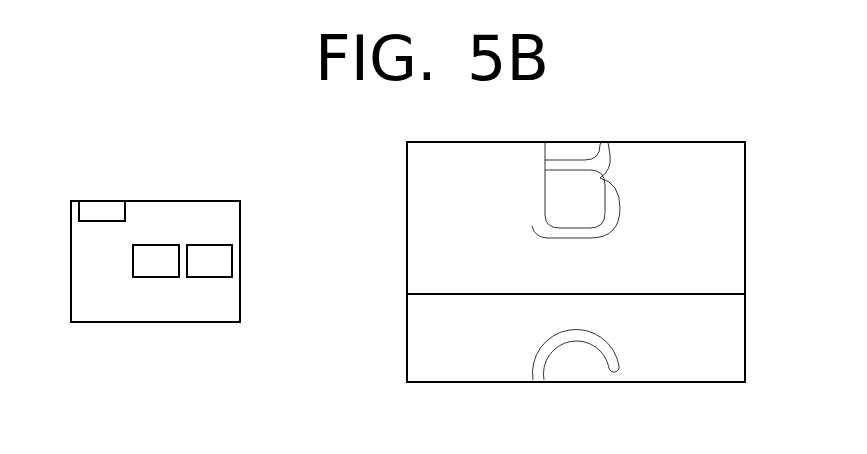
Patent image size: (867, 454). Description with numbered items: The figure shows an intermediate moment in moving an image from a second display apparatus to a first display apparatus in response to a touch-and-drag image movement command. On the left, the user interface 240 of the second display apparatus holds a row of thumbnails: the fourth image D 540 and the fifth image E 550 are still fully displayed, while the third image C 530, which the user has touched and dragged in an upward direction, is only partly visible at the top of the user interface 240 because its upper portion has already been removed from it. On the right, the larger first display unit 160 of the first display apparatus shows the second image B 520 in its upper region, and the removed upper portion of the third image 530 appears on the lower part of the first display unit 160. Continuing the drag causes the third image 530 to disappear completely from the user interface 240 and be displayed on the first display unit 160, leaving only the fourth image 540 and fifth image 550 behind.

The first display unit 160 is at (745, 207).
The user interface 240 is at (207, 200).
The second image B 520 is at (680, 157).
The third image C 530 is at (119, 207).
The fourth image D 540 is at (155, 280).
The fifth image E 550 is at (208, 280).